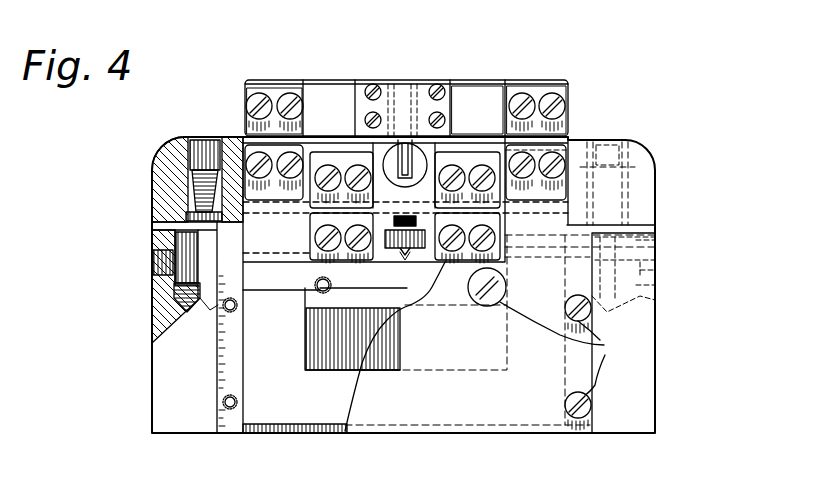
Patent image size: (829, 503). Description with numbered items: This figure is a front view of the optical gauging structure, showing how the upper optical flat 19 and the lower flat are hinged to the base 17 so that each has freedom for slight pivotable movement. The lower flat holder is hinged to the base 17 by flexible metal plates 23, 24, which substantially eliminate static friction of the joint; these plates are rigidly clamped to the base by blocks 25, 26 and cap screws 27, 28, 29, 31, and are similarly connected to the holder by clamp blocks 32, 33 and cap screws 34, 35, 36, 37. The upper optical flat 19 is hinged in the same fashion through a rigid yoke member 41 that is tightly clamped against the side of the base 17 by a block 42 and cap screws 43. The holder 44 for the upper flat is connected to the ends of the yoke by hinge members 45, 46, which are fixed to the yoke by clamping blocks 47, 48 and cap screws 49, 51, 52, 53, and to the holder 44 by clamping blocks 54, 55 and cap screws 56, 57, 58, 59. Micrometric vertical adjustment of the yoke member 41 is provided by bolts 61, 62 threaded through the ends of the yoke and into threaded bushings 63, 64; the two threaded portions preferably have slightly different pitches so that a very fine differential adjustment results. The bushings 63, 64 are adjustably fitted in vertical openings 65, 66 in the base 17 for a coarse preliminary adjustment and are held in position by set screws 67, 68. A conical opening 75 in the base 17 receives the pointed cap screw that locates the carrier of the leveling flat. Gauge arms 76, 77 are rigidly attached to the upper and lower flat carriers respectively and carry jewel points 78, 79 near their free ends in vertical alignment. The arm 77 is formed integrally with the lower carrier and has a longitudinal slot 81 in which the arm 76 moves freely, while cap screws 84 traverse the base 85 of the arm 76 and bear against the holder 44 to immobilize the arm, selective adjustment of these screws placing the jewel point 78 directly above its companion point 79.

The base 17 is at (655, 396).
The upper optical flat 19 is at (337, 80).
The flexible metal plate 23 is at (500, 236).
The flexible metal plate 24 is at (310, 236).
The block 25 is at (500, 333).
The block 26 is at (360, 262).
The cap screw 27 is at (485, 304).
The cap screw 28 is at (447, 262).
The cap screw 29 is at (332, 262).
The cap screw 31 is at (310, 262).
The clamp block 32 is at (470, 168).
The clamp block 33 is at (346, 168).
The cap screw 34 is at (482, 164).
The cap screw 35 is at (452, 164).
The cap screw 36 is at (356, 164).
The cap screw 37 is at (324, 164).
The yoke member 41 is at (160, 166).
The block 42 is at (383, 410).
The cap screws 43 is at (563, 362).
The holder 44 is at (485, 92).
The hinge member 45 is at (243, 126).
The hinge member 46 is at (568, 140).
The clamping block 47 is at (243, 140).
The clamping block 48 is at (568, 145).
The cap screw 49 is at (261, 180).
The cap screw 51 is at (289, 180).
The cap screw 52 is at (521, 180).
The cap screw 53 is at (551, 180).
The clamping block 54 is at (245, 84).
The clamping block 55 is at (507, 90).
The cap screw 56 is at (245, 92).
The cap screw 57 is at (289, 93).
The cap screw 58 is at (524, 94).
The cap screw 59 is at (551, 97).
The bolt 61 is at (200, 140).
The bolt 62 is at (620, 168).
The threaded bushing 63 is at (175, 245).
The threaded bushing 64 is at (655, 240).
The vertical opening 65 is at (160, 298).
The vertical opening 66 is at (655, 302).
The set screw 67 is at (157, 262).
The set screw 68 is at (655, 272).
The conical opening 75 is at (405, 258).
The gauge arm 76 is at (398, 232).
The gauge arm 77 is at (443, 84).
The jewel point 78 is at (427, 84).
The jewel point 79 is at (435, 215).
The longitudinal slot 81 is at (361, 84).
The cap screws 84 is at (375, 84).
The base of the arm 85 is at (400, 145).